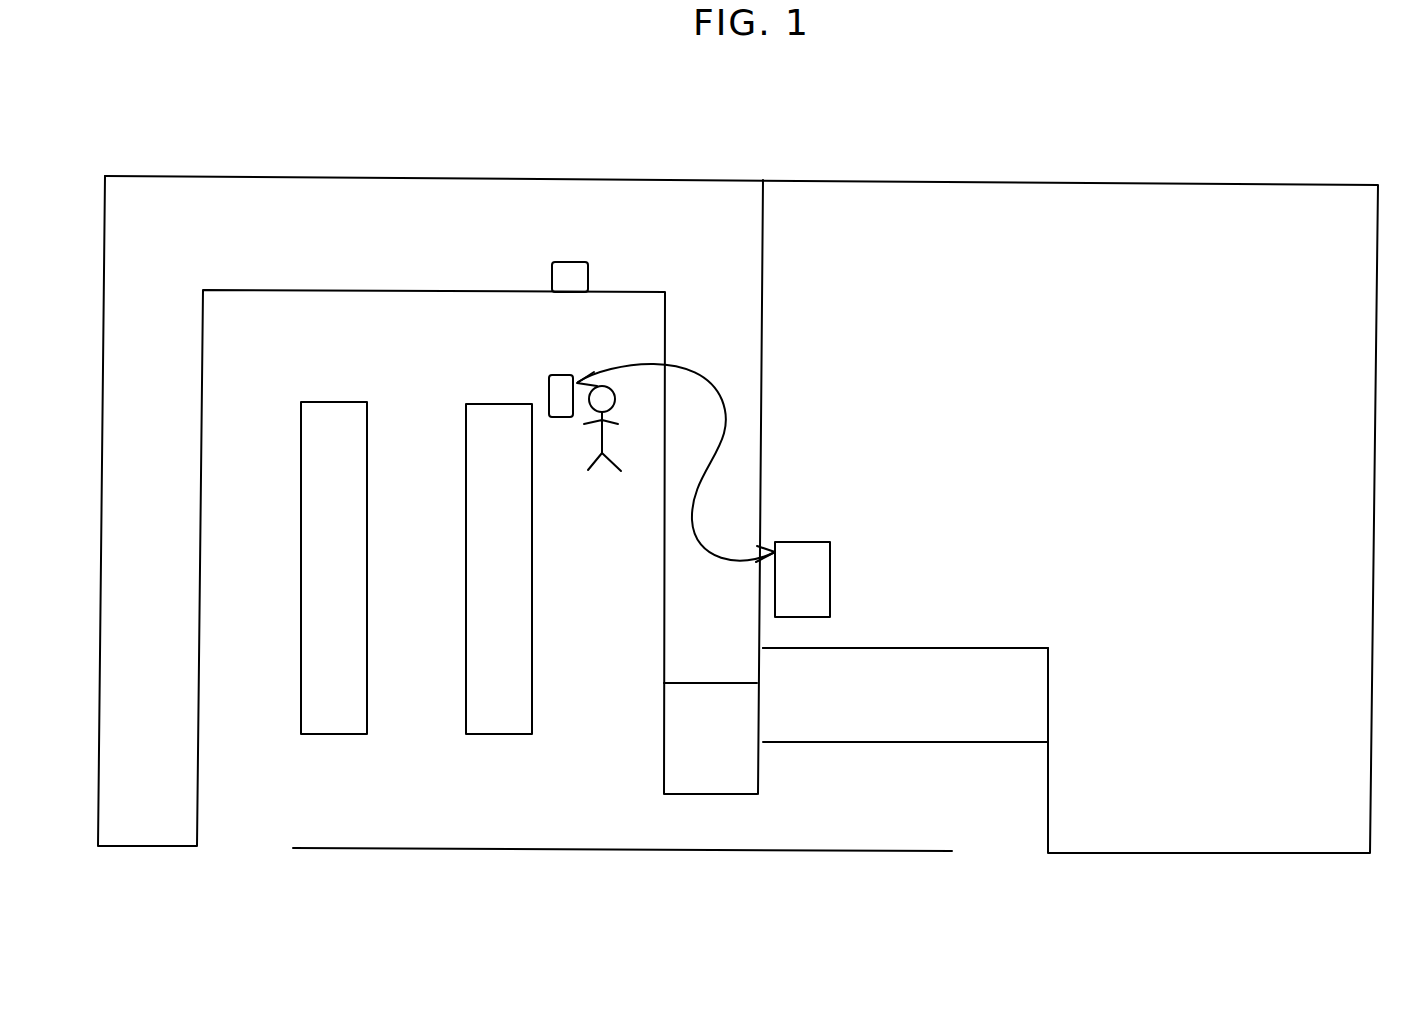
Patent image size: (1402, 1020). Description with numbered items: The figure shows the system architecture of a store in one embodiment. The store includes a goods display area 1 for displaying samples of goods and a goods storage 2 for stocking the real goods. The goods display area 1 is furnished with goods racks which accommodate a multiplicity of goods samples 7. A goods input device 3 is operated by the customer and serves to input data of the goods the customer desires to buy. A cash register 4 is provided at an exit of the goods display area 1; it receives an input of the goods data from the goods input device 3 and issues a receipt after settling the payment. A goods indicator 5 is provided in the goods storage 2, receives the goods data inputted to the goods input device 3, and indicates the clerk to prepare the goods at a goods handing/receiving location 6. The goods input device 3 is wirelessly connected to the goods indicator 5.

The goods display area 1 is at (193, 168).
The goods storage 2 is at (1097, 178).
The goods input device 3 is at (568, 375).
The cash register 4 is at (757, 776).
The goods indicator 5 is at (803, 545).
The goods handing/receiving location 6 is at (1018, 655).
The goods samples 7 is at (568, 262).